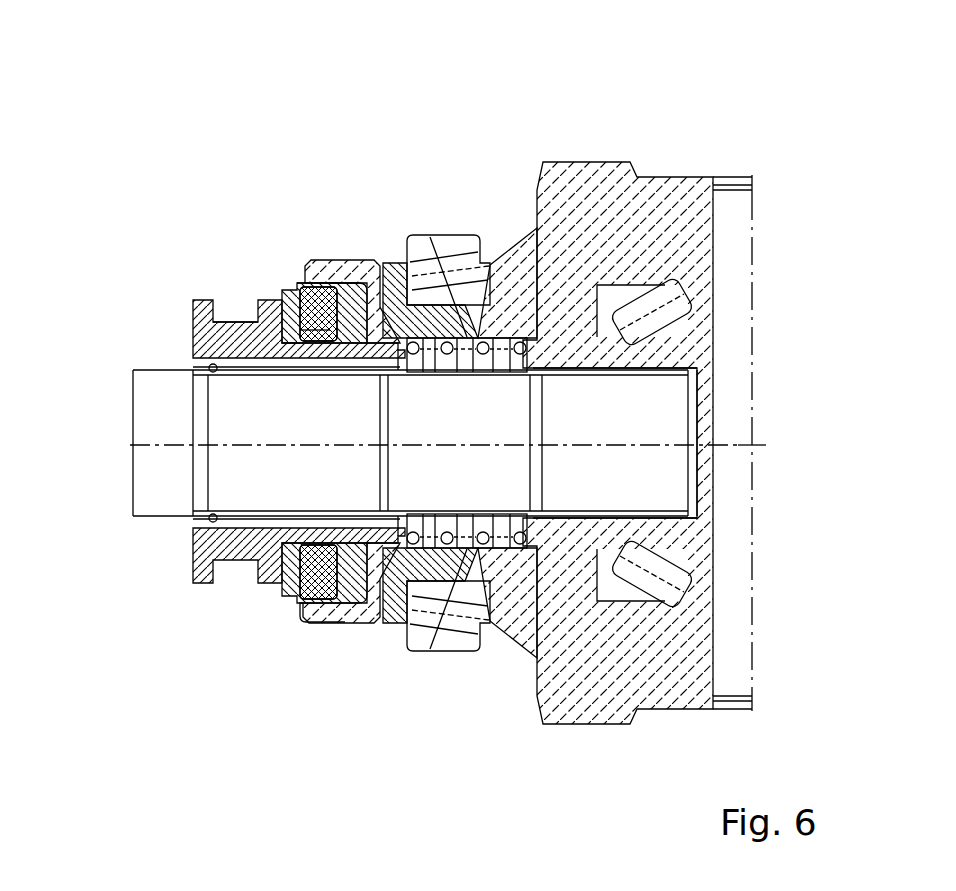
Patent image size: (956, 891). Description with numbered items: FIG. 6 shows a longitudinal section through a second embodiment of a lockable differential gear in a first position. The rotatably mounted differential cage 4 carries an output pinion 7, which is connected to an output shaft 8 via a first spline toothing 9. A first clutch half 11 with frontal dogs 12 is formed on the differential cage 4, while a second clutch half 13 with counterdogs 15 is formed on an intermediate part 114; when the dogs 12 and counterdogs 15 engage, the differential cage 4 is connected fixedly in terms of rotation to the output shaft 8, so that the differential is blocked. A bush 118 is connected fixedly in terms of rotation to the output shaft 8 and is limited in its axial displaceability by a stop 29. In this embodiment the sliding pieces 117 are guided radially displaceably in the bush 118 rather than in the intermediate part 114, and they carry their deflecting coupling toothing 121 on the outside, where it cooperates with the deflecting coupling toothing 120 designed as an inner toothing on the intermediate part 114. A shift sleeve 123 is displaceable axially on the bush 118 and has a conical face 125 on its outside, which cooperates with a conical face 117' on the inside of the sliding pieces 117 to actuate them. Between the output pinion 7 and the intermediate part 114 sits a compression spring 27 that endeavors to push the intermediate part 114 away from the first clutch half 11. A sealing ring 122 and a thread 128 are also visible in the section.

The differential cage 4 is at (608, 223).
The output pinion 7 is at (632, 338).
The output shaft 8 is at (248, 460).
The first spline toothing 9 is at (625, 368).
The first clutch half 11 is at (450, 565).
The dogs 12 is at (415, 565).
The second clutch half 13 is at (295, 650).
The counterdogs 15 is at (448, 711).
The compression spring 27 is at (510, 557).
The stop 29 is at (300, 340).
The intermediate part 114 is at (430, 235).
The sliding pieces 117 is at (279, 334).
The conical face 117' is at (147, 367).
The bush 118 is at (345, 350).
The deflecting coupling toothing 120 is at (325, 286).
The deflecting coupling toothing 121 is at (400, 148).
The sealing ring 122 is at (292, 597).
The shift sleeve 123 is at (207, 550).
The conical face 125 is at (326, 588).
The thread 128 is at (325, 328).